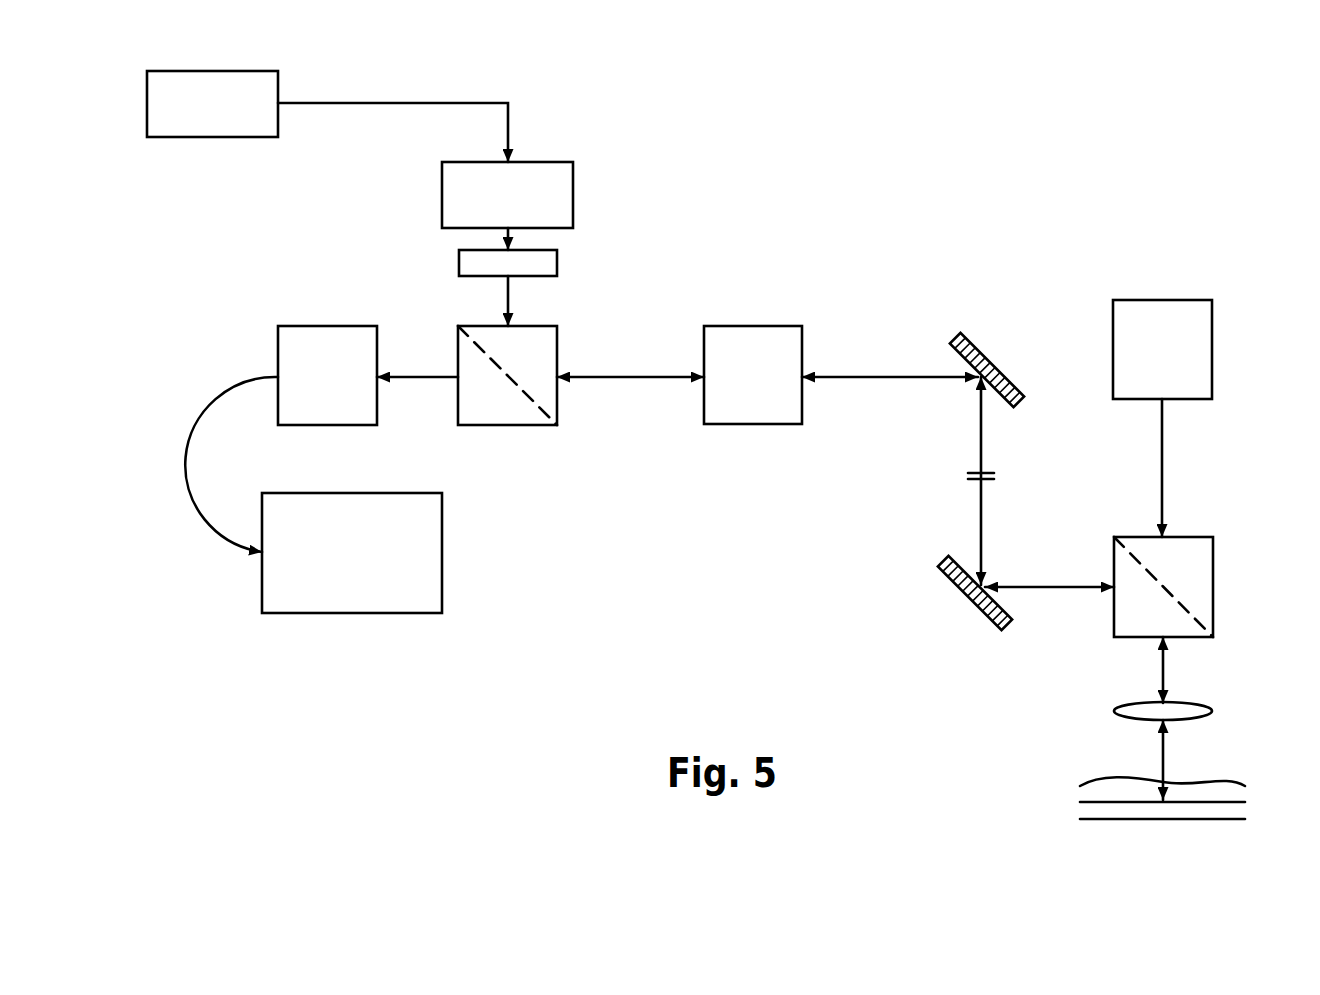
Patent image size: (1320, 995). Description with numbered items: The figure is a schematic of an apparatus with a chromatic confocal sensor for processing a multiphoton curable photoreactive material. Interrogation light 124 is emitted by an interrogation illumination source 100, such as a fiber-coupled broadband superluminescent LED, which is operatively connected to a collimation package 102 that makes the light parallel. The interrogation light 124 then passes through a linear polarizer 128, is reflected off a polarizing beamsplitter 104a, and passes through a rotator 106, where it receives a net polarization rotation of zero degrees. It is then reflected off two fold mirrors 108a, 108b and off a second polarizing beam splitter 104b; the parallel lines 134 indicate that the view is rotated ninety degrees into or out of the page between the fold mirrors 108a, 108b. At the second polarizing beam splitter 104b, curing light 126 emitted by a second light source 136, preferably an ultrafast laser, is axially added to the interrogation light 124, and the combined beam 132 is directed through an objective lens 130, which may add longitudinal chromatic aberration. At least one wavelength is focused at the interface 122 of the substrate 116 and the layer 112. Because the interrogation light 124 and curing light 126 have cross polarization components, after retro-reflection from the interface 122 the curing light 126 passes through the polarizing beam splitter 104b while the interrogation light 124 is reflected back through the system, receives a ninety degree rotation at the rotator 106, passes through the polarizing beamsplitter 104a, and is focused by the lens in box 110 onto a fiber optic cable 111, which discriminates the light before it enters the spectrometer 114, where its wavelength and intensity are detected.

The interrogation illumination source 100 is at (245, 103).
The collimation package 102 is at (540, 180).
The polarizing beamsplitter 104a is at (540, 358).
The second polarizing beam splitter 104b is at (1178, 553).
The rotator 106 is at (762, 352).
The fold mirror 108a is at (970, 345).
The fold mirror 108b is at (980, 603).
The box containing focusing lens 110 is at (310, 358).
The fiber optic cable 111 is at (187, 438).
The layer 112 is at (1212, 792).
The spectrometer 114 is at (408, 595).
The substrate 116 is at (1139, 808).
The interface 122 is at (1083, 803).
The interrogation light 124 is at (393, 105).
The curing light 126 is at (1163, 445).
The linear polarizer 128 is at (483, 260).
The objective lens 130 is at (1163, 710).
The combined beam 132 is at (1165, 673).
The parallel lines 134 is at (968, 477).
The second light source 136 is at (1162, 343).